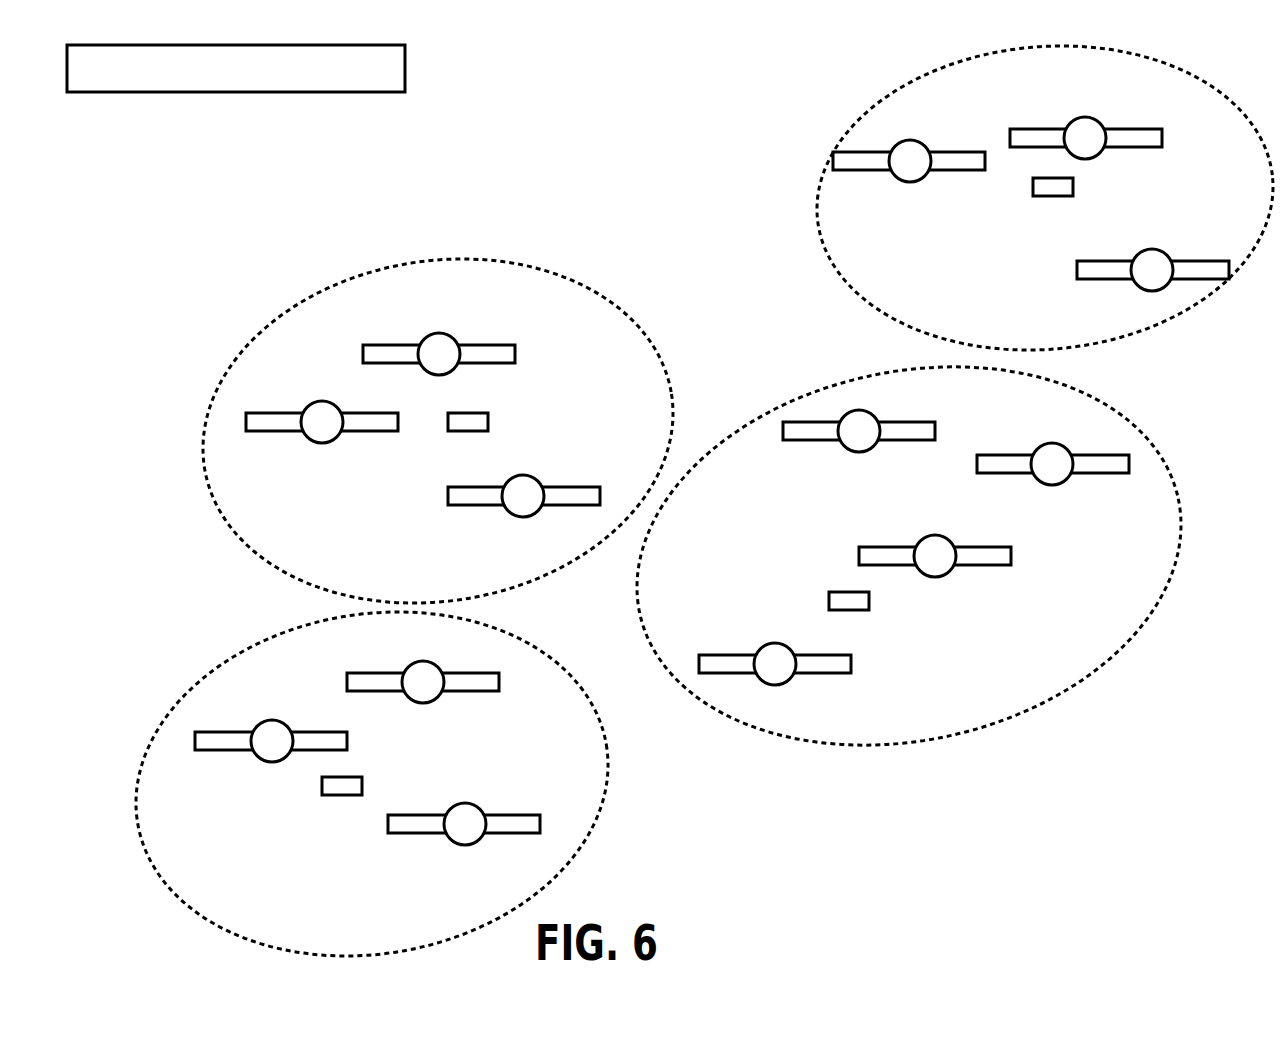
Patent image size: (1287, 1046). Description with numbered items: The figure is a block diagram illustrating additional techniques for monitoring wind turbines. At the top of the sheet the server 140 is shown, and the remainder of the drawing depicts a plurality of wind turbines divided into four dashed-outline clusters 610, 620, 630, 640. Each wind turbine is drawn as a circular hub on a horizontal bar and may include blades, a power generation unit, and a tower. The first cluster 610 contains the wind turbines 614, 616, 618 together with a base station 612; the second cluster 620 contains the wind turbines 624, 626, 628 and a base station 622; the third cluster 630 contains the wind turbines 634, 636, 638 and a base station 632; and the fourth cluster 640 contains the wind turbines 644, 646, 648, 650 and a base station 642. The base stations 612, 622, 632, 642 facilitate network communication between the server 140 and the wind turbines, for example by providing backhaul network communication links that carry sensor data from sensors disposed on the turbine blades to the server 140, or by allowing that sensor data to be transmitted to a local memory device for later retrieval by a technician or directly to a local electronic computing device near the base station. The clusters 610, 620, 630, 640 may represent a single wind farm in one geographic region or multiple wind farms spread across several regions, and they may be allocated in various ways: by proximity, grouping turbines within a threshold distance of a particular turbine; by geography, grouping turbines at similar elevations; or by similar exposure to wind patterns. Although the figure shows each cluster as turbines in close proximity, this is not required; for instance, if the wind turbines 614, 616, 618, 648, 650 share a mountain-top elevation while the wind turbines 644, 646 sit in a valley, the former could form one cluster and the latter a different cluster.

The server 140 is at (405, 66).
The cluster 610 is at (608, 763).
The base station 612 is at (362, 785).
The wind turbine 614 is at (273, 720).
The wind turbine 616 is at (424, 661).
The wind turbine 618 is at (470, 804).
The cluster 620 is at (522, 264).
The base station 622 is at (488, 421).
The wind turbine 624 is at (440, 333).
The wind turbine 626 is at (524, 475).
The wind turbine 628 is at (323, 401).
The cluster 630 is at (1128, 57).
The base station 632 is at (1073, 186).
The wind turbine 634 is at (1153, 249).
The wind turbine 636 is at (1086, 117).
The wind turbine 638 is at (911, 140).
The cluster 640 is at (1090, 393).
The base station 642 is at (869, 600).
The wind turbine 644 is at (776, 643).
The wind turbine 646 is at (936, 535).
The wind turbine 648 is at (1129, 461).
The wind turbine 650 is at (935, 428).